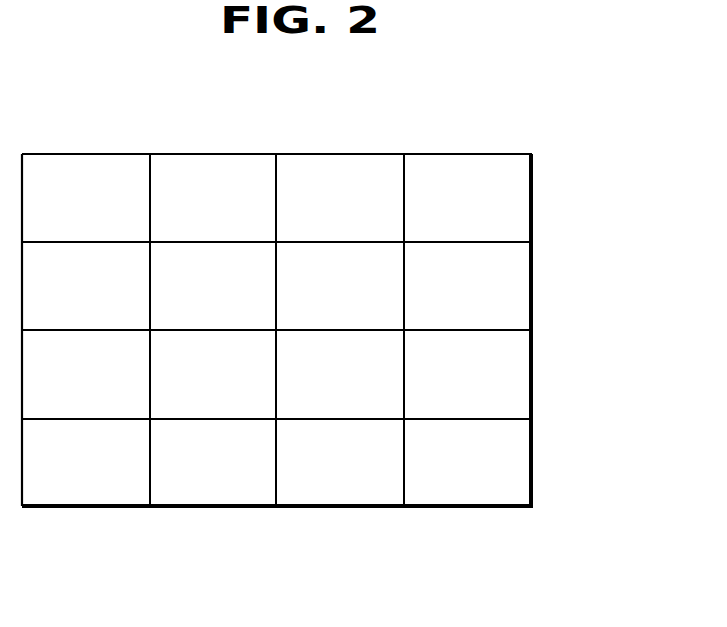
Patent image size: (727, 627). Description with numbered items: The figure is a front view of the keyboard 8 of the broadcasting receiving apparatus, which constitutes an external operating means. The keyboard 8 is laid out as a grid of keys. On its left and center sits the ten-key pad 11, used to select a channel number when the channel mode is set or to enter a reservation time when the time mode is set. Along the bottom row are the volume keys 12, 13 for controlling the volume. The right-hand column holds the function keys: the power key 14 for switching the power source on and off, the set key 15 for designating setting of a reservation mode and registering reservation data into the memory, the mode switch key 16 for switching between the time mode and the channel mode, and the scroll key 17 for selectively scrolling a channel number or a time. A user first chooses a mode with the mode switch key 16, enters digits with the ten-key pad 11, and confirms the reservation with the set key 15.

The keyboard 8 is at (408, 134).
The ten-key pad 11 is at (215, 154).
The volume key 12 is at (360, 506).
The volume key 13 is at (190, 506).
The power key 14 is at (527, 205).
The set key 15 is at (527, 293).
The mode switch key 16 is at (526, 400).
The scroll key 17 is at (525, 482).